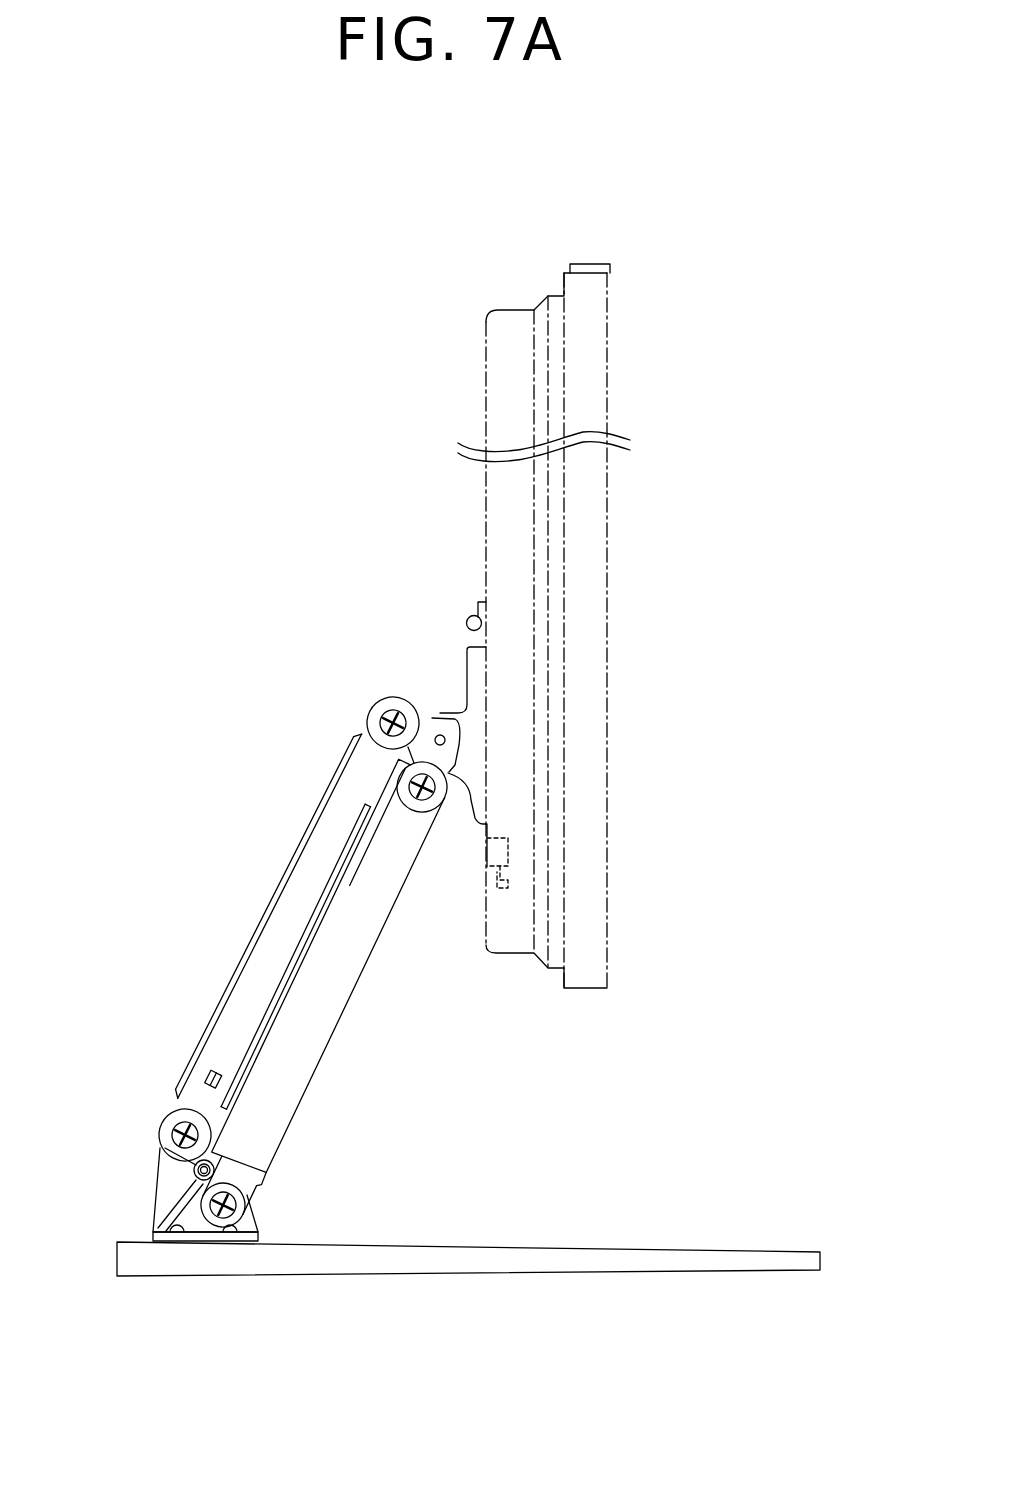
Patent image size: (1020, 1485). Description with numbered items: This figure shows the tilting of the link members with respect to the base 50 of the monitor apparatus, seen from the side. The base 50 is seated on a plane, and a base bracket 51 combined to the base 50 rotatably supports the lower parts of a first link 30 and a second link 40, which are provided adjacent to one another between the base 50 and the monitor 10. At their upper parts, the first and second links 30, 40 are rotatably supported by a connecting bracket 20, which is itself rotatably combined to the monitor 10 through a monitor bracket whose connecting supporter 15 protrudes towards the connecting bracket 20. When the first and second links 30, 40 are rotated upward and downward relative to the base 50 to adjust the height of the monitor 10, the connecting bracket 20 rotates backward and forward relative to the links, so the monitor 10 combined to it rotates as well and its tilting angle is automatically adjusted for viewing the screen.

The monitor 10 is at (587, 597).
The connecting supporter 15 is at (475, 788).
The connecting bracket 20 is at (432, 718).
The first link 30 is at (330, 1005).
The second link 40 is at (282, 948).
The base 50 is at (320, 1253).
The base bracket 51 is at (175, 1185).